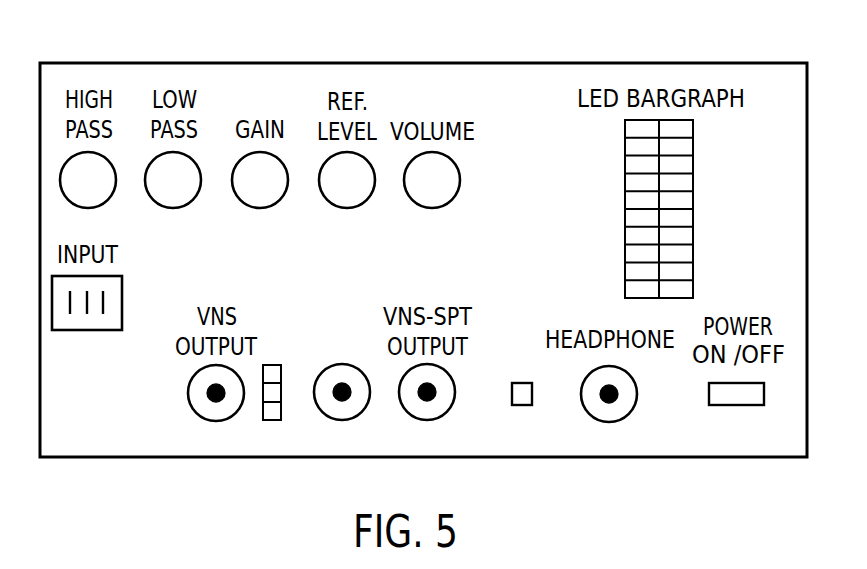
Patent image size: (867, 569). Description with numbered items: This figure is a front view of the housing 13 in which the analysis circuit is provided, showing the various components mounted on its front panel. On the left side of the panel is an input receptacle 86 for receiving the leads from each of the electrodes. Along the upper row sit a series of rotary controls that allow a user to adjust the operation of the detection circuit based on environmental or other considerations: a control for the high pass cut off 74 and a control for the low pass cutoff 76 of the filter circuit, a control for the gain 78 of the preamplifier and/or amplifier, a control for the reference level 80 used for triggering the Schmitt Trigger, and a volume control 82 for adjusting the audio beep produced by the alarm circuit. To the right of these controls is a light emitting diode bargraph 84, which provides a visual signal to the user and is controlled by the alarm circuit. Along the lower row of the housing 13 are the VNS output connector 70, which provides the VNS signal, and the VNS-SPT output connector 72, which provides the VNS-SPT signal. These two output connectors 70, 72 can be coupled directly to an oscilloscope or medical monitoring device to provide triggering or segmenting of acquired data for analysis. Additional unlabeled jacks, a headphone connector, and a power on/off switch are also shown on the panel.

The housing 13 is at (723, 63).
The VNS output connector 70 is at (215, 421).
The VNS-SPT output connector 72 is at (425, 420).
The high pass cut off control 74 is at (88, 208).
The low pass cutoff control 76 is at (173, 208).
The gain control 78 is at (260, 208).
The reference level control 80 is at (347, 208).
The volume control 82 is at (432, 208).
The light emitting diode bargraph 84 is at (693, 203).
The input receptacle 86 is at (85, 330).